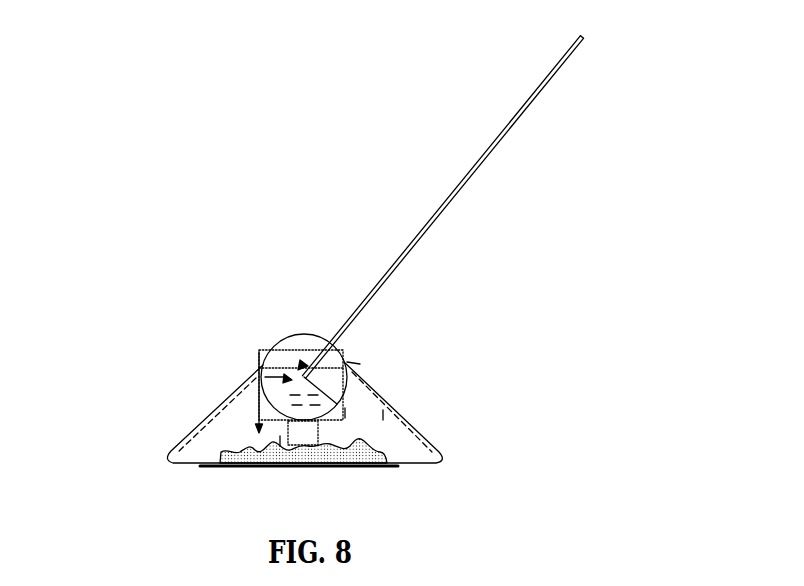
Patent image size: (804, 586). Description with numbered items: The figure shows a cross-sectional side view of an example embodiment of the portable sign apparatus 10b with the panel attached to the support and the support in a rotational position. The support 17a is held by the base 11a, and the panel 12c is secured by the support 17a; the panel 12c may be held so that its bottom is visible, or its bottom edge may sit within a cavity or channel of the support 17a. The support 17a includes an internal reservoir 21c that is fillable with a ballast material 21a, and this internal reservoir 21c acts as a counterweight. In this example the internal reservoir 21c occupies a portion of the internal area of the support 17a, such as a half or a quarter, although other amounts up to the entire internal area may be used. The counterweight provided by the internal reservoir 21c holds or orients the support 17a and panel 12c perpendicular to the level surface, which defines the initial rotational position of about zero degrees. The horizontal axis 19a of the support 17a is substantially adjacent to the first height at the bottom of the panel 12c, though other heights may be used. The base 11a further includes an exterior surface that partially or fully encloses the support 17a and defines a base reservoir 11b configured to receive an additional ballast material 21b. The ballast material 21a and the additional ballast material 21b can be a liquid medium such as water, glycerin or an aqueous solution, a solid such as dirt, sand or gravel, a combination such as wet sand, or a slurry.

The portable sign apparatus 10b is at (346, 100).
The panel 12c is at (440, 218).
The support 17a is at (300, 335).
The internal reservoir 21c is at (297, 353).
The ballast material 21a is at (263, 373).
The base 11a is at (163, 458).
The base reservoir 11b is at (395, 443).
The horizontal axis 19a is at (347, 362).
The additional ballast material 21b is at (297, 447).